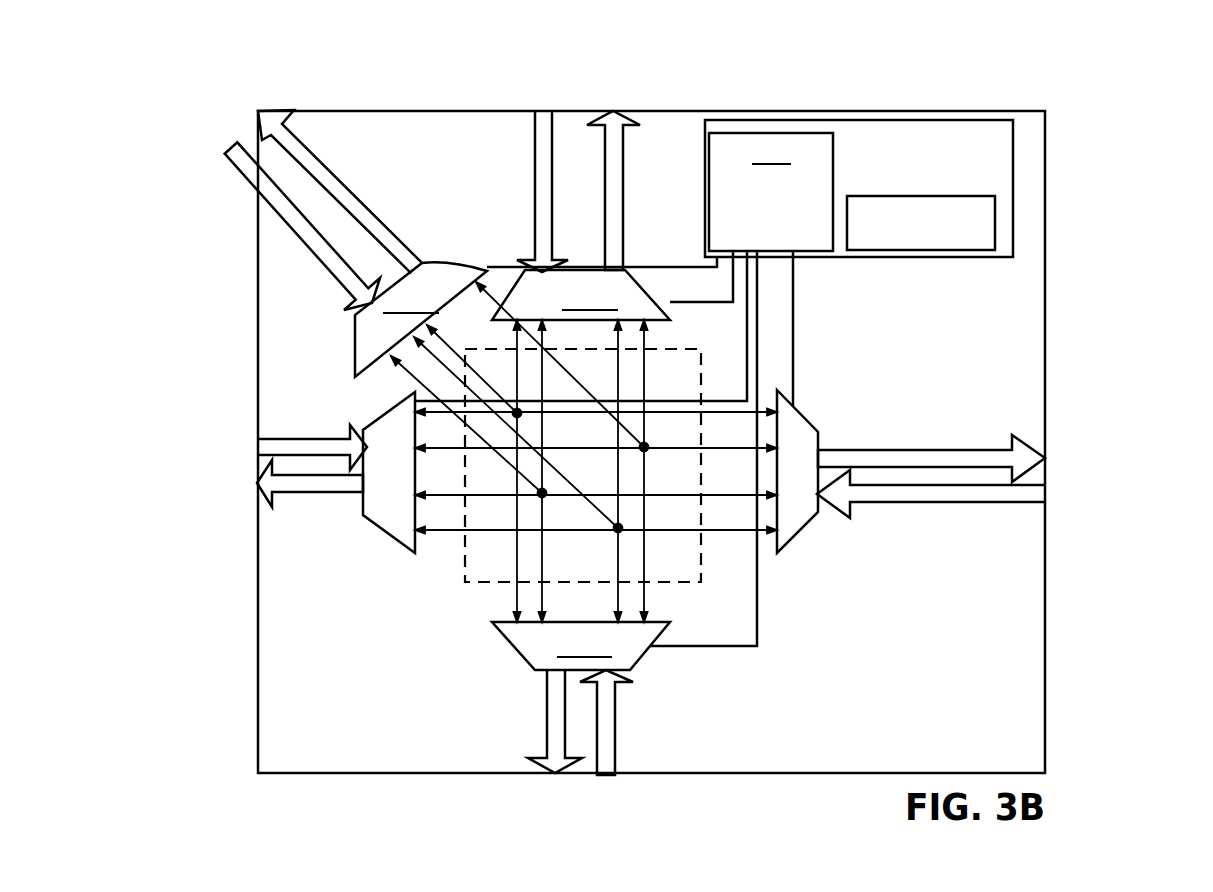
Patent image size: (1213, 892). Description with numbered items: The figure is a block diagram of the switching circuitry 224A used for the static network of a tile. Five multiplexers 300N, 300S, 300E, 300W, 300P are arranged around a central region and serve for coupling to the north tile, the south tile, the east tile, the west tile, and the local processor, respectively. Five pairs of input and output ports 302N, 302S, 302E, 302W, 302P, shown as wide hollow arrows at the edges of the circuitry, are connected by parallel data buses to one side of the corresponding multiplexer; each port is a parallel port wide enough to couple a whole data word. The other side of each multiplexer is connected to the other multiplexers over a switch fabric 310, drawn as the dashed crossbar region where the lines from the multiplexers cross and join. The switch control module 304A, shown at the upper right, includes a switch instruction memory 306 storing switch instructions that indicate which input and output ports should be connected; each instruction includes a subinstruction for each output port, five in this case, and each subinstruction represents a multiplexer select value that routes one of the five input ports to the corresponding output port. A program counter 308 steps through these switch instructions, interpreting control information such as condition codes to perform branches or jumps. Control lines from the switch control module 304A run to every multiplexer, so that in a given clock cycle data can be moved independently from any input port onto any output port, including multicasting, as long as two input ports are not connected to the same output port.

The switching circuitry 224A is at (803, 111).
The switch instruction memory 306 is at (771, 192).
The program counter 308 is at (968, 196).
The switch control module 304A is at (803, 258).
The switch fabric 310 is at (667, 349).
The multiplexer 300P is at (421, 319).
The multiplexer 300N is at (581, 295).
The multiplexer 300S is at (581, 646).
The multiplexer 300W is at (382, 518).
The multiplexer 300E is at (812, 422).
The pair of input and output ports 302P is at (304, 190).
The pair of input and output ports 302N is at (578, 164).
The pair of input and output ports 302S is at (577, 751).
The pair of input and output ports 302W is at (254, 470).
The pair of input and output ports 302E is at (984, 477).